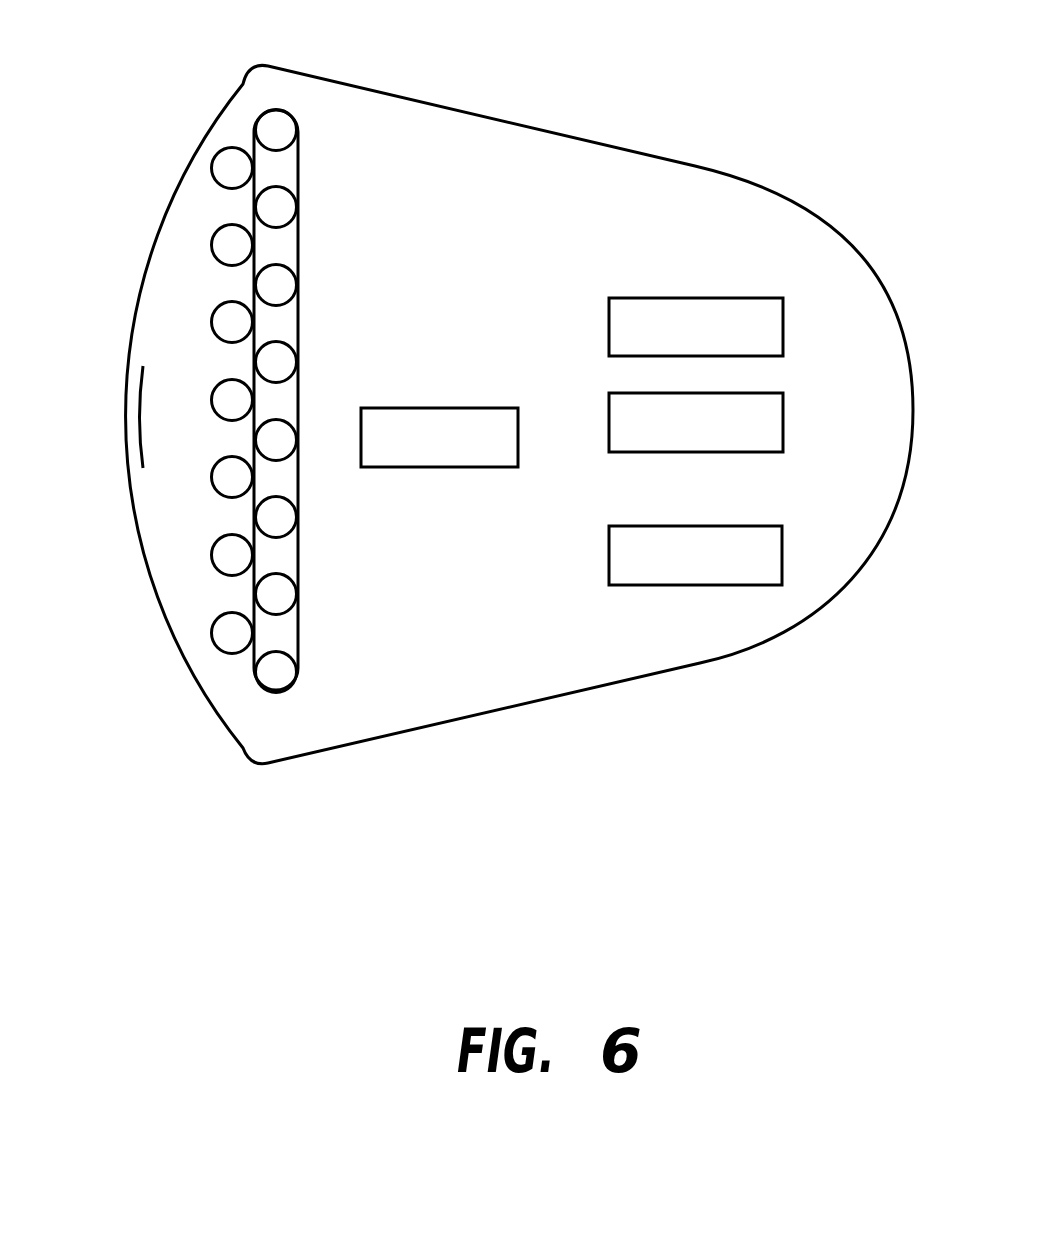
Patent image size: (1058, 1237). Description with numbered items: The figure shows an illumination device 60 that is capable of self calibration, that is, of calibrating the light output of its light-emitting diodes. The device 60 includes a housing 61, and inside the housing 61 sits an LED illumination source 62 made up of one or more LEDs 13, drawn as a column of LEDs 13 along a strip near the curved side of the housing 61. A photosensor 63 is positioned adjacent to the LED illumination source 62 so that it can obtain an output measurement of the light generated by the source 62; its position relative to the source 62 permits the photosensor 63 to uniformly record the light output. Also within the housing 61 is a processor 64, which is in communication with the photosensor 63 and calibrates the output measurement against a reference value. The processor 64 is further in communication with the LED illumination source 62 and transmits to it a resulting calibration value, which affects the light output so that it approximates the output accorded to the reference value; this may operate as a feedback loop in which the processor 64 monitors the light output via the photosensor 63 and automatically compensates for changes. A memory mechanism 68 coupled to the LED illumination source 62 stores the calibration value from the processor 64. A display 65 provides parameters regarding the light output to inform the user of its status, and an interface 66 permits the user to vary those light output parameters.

The illumination device 60 is at (683, 106).
The housing 61 is at (527, 125).
The LED illumination source 62 is at (299, 618).
The photosensor 63 is at (129, 368).
The LEDs 13 is at (260, 688).
The processor 64 is at (650, 585).
The display 65 is at (652, 298).
The interface 66 is at (785, 400).
The memory mechanism 68 is at (490, 467).